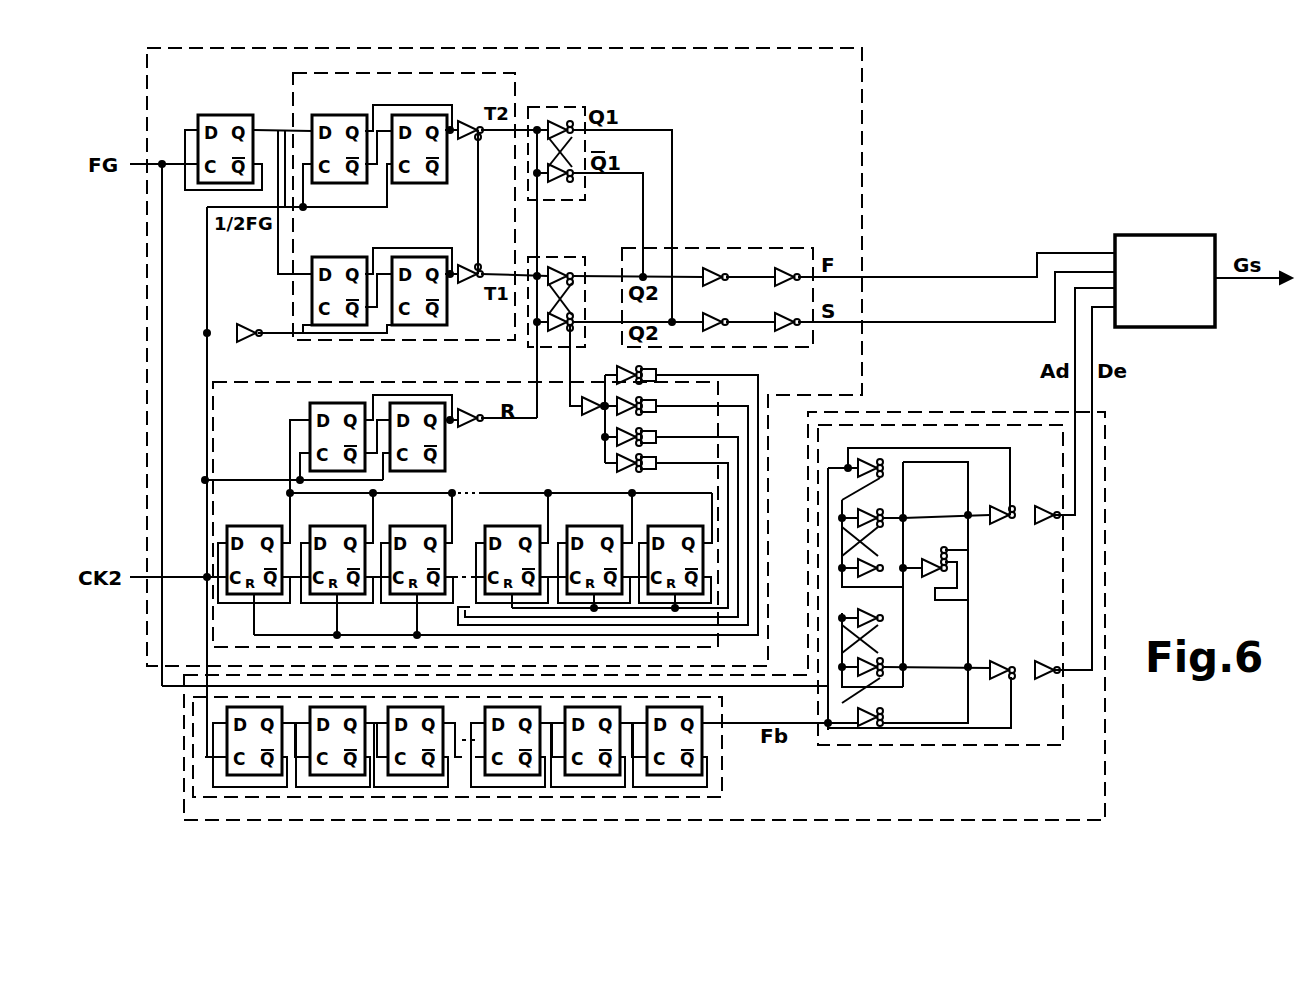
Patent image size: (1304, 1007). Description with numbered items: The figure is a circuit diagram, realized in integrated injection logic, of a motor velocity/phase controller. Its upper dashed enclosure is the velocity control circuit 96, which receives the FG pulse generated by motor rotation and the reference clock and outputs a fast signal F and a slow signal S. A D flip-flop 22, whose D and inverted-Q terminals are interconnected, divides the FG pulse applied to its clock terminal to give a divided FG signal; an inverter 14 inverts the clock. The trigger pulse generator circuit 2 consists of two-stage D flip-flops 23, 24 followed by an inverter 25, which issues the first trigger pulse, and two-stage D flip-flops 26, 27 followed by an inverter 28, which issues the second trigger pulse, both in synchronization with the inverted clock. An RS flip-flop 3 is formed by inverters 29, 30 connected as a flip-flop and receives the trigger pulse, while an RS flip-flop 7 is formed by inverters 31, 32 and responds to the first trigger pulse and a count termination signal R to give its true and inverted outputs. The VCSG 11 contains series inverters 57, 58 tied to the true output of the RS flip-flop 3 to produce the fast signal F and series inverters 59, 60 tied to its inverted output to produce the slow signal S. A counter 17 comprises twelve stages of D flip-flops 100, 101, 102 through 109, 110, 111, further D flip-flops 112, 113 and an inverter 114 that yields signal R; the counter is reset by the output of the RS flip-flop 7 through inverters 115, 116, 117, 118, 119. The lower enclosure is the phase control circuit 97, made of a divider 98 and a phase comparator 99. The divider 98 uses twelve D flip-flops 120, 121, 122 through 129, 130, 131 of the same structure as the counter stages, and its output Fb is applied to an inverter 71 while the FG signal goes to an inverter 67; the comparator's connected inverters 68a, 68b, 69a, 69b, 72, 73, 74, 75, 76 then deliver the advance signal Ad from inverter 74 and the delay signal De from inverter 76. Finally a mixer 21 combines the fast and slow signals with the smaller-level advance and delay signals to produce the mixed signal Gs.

The trigger pulse generator circuit 2 is at (412, 73).
The RS flip-flop 3 is at (530, 107).
The RS flip-flop 7 is at (585, 250).
The VCSG 11 is at (712, 248).
The inverter 14 is at (245, 324).
The counter 17 is at (213, 418).
The mixer 21 is at (1165, 235).
The D flip-flop 22 is at (210, 115).
The D flip-flop 23 is at (342, 257).
The D flip-flop 24 is at (417, 257).
The inverter 25 is at (463, 284).
The D flip-flop 26 is at (338, 115).
The D flip-flop 27 is at (420, 182).
The inverter 28 is at (466, 125).
The inverter 29 is at (553, 121).
The inverter 30 is at (573, 176).
The inverter 31 is at (558, 268).
The inverter 32 is at (555, 330).
The inverter 57 is at (726, 277).
The inverter 58 is at (786, 268).
The inverter 59 is at (726, 322).
The inverter 60 is at (783, 331).
The inverter 67 is at (868, 468).
The inverter 68a is at (872, 508).
The inverter 68b is at (872, 558).
The inverter 69a is at (874, 625).
The inverter 69b is at (874, 675).
The inverter 71 is at (856, 735).
The inverter 72 is at (938, 575).
The inverter 73 is at (993, 522).
The inverter 74 is at (1038, 522).
The inverter 75 is at (995, 663).
The inverter 76 is at (1040, 663).
The velocity control circuit 96 is at (862, 82).
The phase control circuit 97 is at (1105, 768).
The divider 98 is at (193, 766).
The phase comparator 99 is at (935, 745).
The D flip-flop 100 is at (237, 526).
The D flip-flop 101 is at (318, 526).
The D flip-flop 102 is at (400, 526).
The D flip-flop 109 is at (500, 526).
The D flip-flop 110 is at (580, 526).
The D flip-flop 111 is at (662, 526).
The D flip-flop 112 is at (310, 412).
The D flip-flop 113 is at (445, 460).
The inverter 114 is at (466, 427).
The inverter 115 is at (588, 414).
The inverter 116 is at (650, 371).
The inverter 117 is at (650, 401).
The inverter 118 is at (650, 431).
The inverter 119 is at (650, 458).
The D flip-flop 120 is at (253, 775).
The D flip-flop 121 is at (337, 775).
The D flip-flop 122 is at (415, 775).
The D flip-flop 129 is at (513, 775).
The D flip-flop 130 is at (594, 775).
The D flip-flop 131 is at (675, 775).